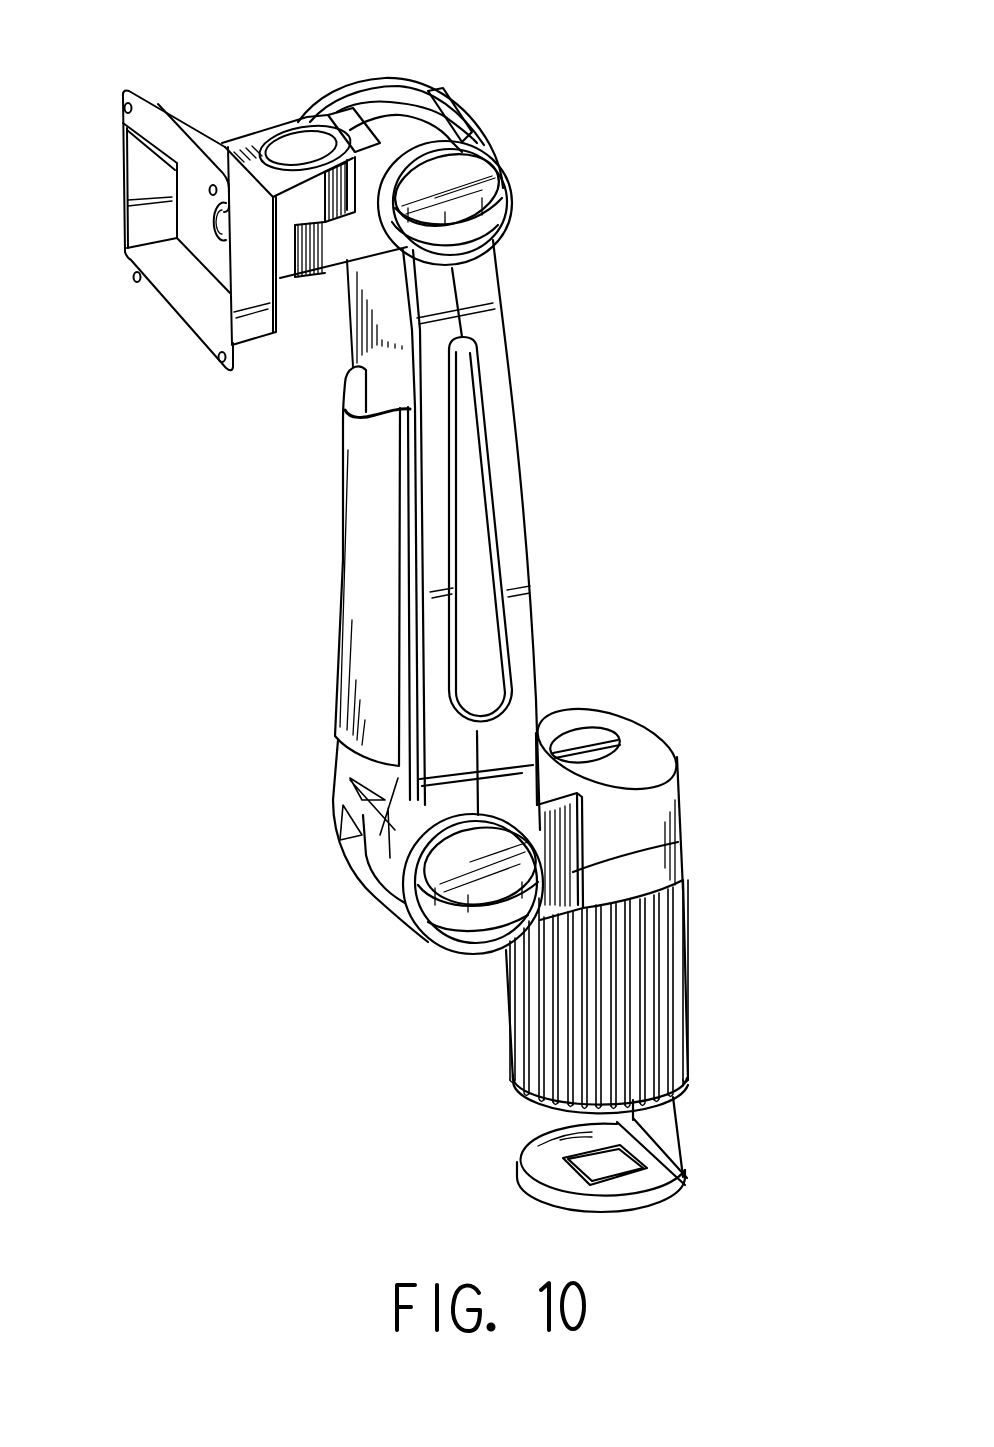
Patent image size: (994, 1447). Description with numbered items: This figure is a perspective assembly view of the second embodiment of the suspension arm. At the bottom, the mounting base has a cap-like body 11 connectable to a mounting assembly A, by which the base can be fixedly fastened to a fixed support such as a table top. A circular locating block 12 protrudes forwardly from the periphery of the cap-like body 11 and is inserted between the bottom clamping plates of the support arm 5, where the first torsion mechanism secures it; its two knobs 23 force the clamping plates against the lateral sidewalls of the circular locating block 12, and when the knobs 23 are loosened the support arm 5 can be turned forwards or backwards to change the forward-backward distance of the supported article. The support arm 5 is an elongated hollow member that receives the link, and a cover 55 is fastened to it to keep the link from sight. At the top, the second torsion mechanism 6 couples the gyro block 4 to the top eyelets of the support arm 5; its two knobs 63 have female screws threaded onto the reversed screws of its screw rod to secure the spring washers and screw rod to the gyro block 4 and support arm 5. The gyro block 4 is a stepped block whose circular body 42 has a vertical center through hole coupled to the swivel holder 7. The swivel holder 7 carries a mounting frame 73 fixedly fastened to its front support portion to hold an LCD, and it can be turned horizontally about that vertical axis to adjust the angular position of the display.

The gyro block 4 is at (388, 96).
The swivel holder 7 is at (243, 147).
The knobs 63 is at (488, 187).
The cover 55 is at (480, 284).
The support arm 5 is at (377, 328).
The mounting frame 73 is at (250, 328).
The circular body 42 is at (309, 275).
The second torsion mechanism 6 is at (368, 497).
The cap-like body 11 is at (662, 803).
The circular locating block 12 is at (572, 872).
The mounting assembly A is at (688, 993).
The knobs 23 is at (465, 912).